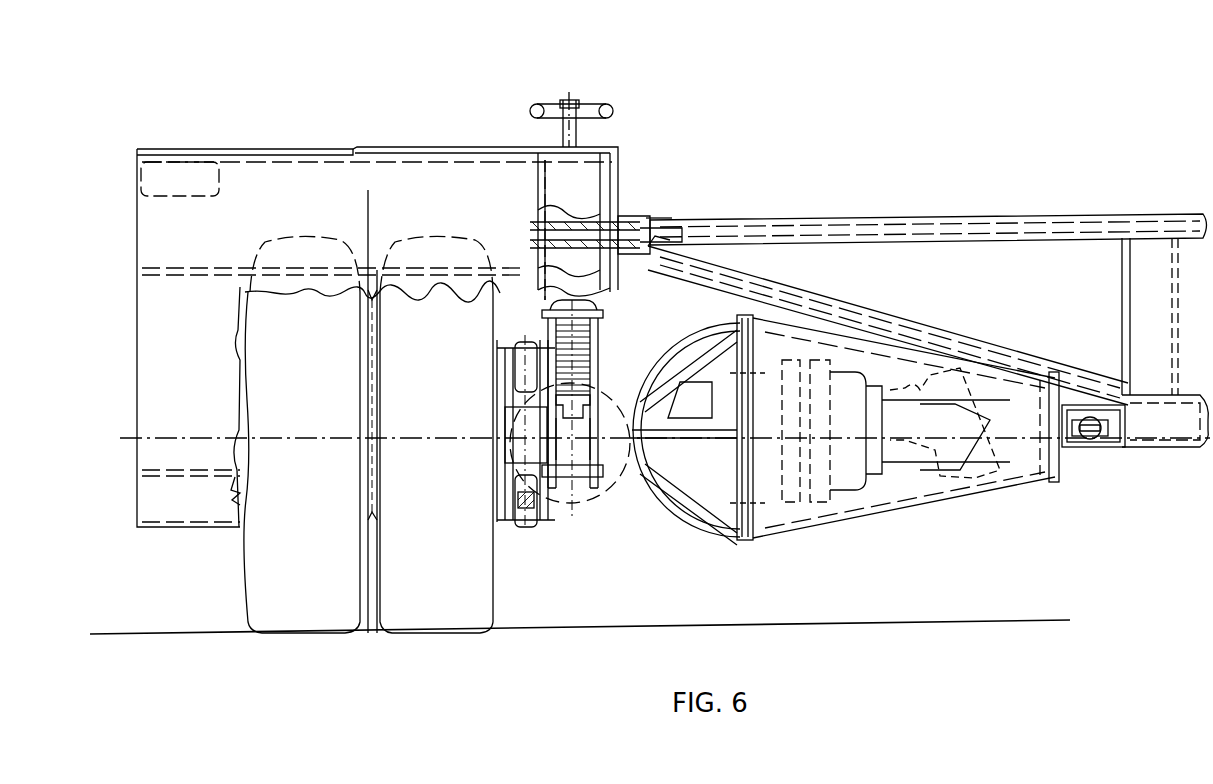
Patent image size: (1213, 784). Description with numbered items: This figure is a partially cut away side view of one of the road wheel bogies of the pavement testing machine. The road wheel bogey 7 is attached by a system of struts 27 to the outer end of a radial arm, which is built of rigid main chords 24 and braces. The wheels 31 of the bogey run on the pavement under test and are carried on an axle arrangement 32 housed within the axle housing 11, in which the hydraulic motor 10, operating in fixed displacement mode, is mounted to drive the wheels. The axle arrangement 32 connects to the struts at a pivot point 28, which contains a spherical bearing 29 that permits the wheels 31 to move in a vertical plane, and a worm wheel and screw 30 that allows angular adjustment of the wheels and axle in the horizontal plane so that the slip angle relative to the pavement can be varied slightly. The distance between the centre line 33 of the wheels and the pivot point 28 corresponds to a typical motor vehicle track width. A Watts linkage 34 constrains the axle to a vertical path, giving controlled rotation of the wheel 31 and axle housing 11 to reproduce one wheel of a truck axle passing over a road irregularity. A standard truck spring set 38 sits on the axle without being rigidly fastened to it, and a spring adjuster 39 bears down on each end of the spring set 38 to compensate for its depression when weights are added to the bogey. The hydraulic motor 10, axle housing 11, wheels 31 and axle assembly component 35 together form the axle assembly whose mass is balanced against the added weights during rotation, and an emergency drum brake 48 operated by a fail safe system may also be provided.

The road wheel bogey 7 is at (325, 185).
The hydraulic motor 10 is at (921, 412).
The axle housing 11 is at (608, 415).
The main chords 24 is at (1153, 214).
The struts 27 is at (985, 244).
The pivot point 28 is at (1077, 405).
The spherical bearing 29 is at (1090, 436).
The worm wheel and screw 30 is at (1097, 434).
The wheels 31 is at (372, 434).
The axle arrangement 32 is at (675, 458).
The centre line 33 is at (375, 636).
The Watts linkage 34 is at (522, 340).
The axle assembly component 35 is at (782, 347).
The spring set 38 is at (582, 330).
The spring adjuster 39 is at (571, 100).
The emergency drum brake 48 is at (498, 517).